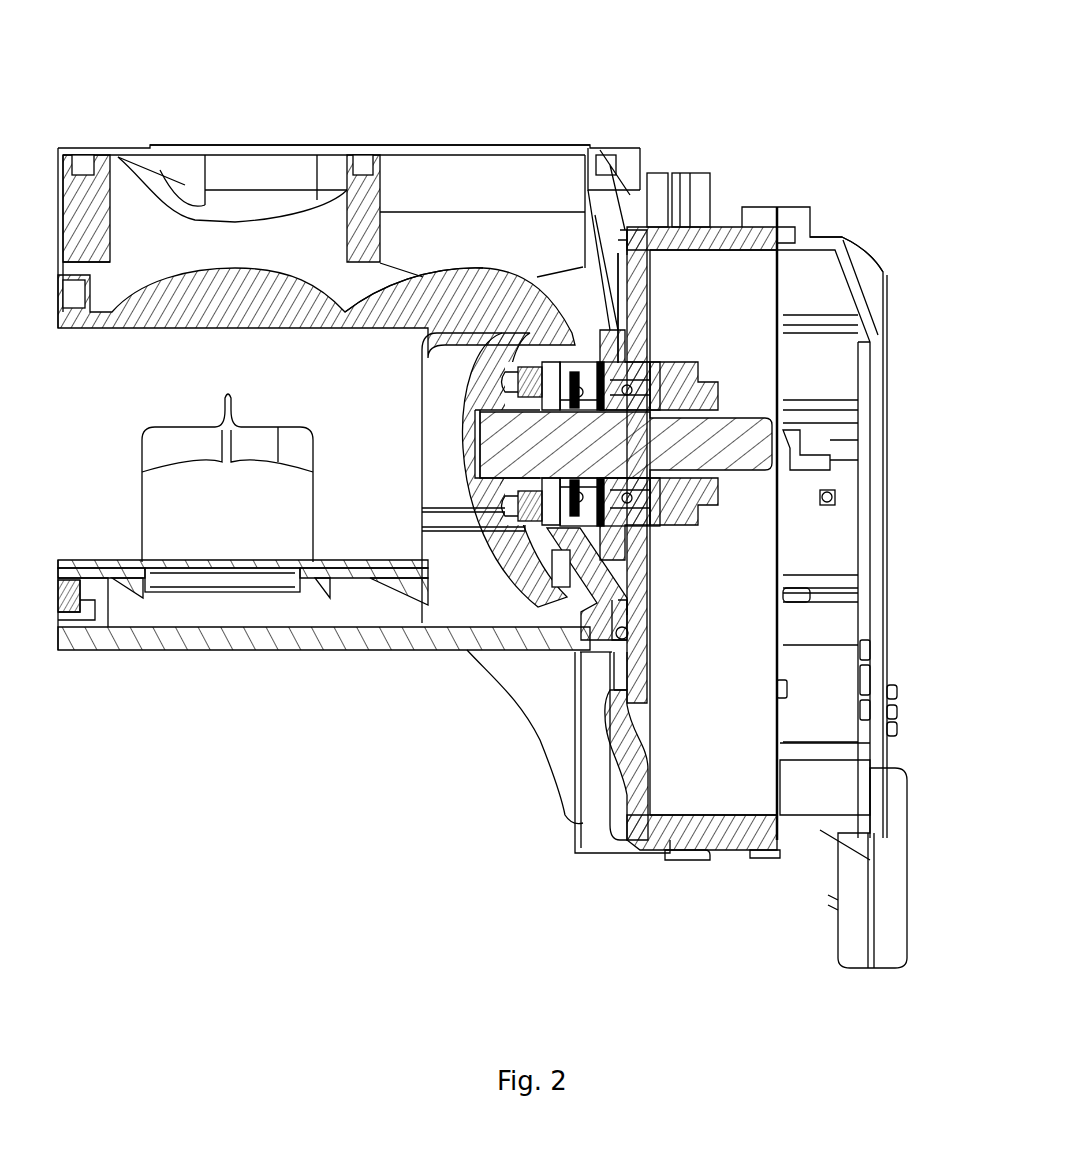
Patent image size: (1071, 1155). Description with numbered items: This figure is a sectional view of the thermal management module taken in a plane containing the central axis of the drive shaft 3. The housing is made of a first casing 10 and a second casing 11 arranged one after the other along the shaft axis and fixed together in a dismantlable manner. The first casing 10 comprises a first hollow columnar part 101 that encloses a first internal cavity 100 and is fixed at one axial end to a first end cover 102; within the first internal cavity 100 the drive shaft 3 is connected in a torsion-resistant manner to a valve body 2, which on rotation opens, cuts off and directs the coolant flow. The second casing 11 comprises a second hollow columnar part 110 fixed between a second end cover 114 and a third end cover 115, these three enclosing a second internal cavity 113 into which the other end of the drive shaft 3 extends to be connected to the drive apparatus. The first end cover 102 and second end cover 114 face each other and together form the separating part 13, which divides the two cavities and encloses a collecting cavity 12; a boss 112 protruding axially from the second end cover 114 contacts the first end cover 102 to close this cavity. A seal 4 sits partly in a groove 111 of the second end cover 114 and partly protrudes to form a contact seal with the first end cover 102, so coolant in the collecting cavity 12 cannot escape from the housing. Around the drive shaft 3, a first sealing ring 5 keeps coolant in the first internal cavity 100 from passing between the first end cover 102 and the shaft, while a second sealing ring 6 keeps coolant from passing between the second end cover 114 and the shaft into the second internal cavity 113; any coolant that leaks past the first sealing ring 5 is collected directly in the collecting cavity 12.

The first casing 10 is at (278, 133).
The first internal cavity 100 is at (453, 350).
The valve body 2 is at (490, 290).
The first hollow columnar part 101 is at (537, 170).
The separating part 13 is at (633, 80).
The first end cover 102 is at (590, 165).
The second end cover 114 is at (633, 300).
The second hollow columnar part 110 is at (700, 173).
The second internal cavity 113 is at (757, 262).
The third end cover 115 is at (830, 240).
The second casing 11 is at (890, 228).
The boss 112 is at (618, 247).
The collecting cavity 12 is at (638, 310).
The second sealing ring 6 is at (662, 368).
The first sealing ring 5 is at (548, 368).
The drive shaft 3 is at (738, 437).
The groove 111 is at (642, 615).
The seal 4 is at (630, 633).